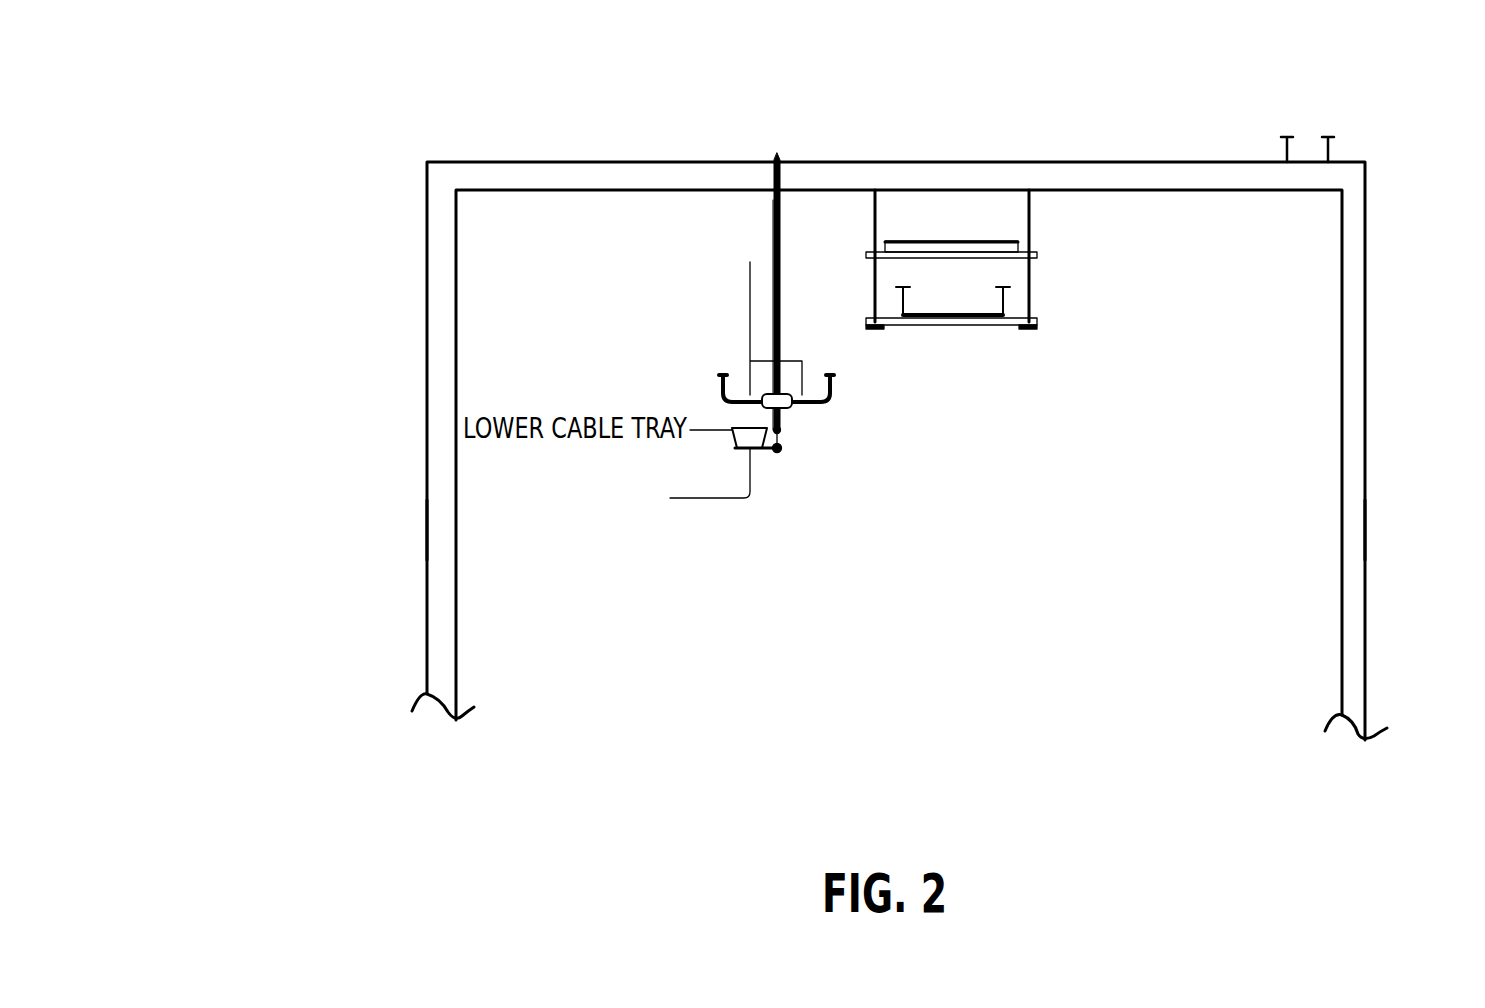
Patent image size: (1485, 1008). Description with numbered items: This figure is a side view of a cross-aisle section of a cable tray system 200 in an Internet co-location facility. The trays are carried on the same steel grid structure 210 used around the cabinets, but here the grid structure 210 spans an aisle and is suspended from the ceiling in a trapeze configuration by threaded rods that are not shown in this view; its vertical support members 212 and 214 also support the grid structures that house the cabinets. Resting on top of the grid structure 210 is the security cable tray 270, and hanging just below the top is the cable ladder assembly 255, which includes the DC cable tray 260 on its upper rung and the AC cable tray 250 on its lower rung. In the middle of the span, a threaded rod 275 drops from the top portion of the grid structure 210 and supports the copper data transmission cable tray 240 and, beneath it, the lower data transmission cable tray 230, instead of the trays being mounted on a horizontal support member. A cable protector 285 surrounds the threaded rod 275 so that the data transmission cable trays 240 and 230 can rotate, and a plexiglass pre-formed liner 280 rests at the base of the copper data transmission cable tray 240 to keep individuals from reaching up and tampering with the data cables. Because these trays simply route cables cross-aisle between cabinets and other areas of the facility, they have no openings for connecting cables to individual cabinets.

The cable tray system 200 is at (324, 423).
The grid structure 210 is at (472, 161).
The vertical support member 212 is at (427, 520).
The vertical support member 214 is at (1365, 530).
The data transmission cable tray 230 is at (640, 507).
The copper data transmission cable tray 240 is at (685, 333).
The AC cable tray 250 is at (921, 309).
The cable ladder assembly 255 is at (871, 276).
The DC cable tray 260 is at (906, 231).
The security cable tray 270 is at (1390, 152).
The threaded rod 275 is at (780, 232).
The pre-formed liner 280 is at (750, 267).
The cable protector 285 is at (773, 224).